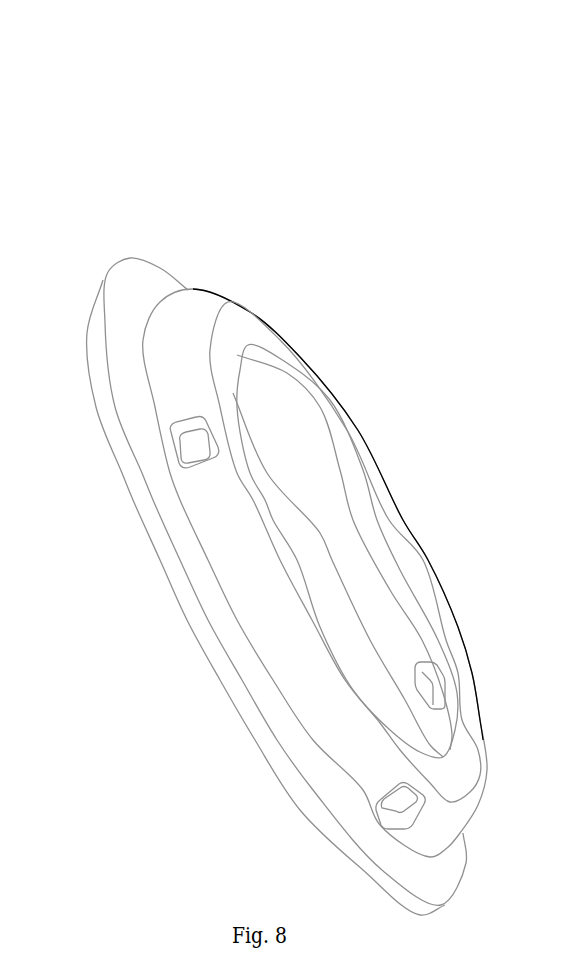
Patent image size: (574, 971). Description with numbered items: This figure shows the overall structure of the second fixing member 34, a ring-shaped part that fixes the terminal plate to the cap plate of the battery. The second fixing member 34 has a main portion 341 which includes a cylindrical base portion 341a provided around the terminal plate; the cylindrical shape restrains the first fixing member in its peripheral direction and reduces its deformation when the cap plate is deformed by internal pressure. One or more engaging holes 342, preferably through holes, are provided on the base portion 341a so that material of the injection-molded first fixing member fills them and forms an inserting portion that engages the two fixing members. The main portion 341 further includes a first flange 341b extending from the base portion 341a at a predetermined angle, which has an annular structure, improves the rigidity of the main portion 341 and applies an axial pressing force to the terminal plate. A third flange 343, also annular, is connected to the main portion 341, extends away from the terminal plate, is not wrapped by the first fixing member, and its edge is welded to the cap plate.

The second fixing member 34 is at (268, 37).
The main portion 341 is at (315, 500).
The base portion 341a is at (195, 302).
The first flange 341b is at (250, 328).
The engaging hole 342 is at (190, 452).
The third flange 343 is at (137, 280).